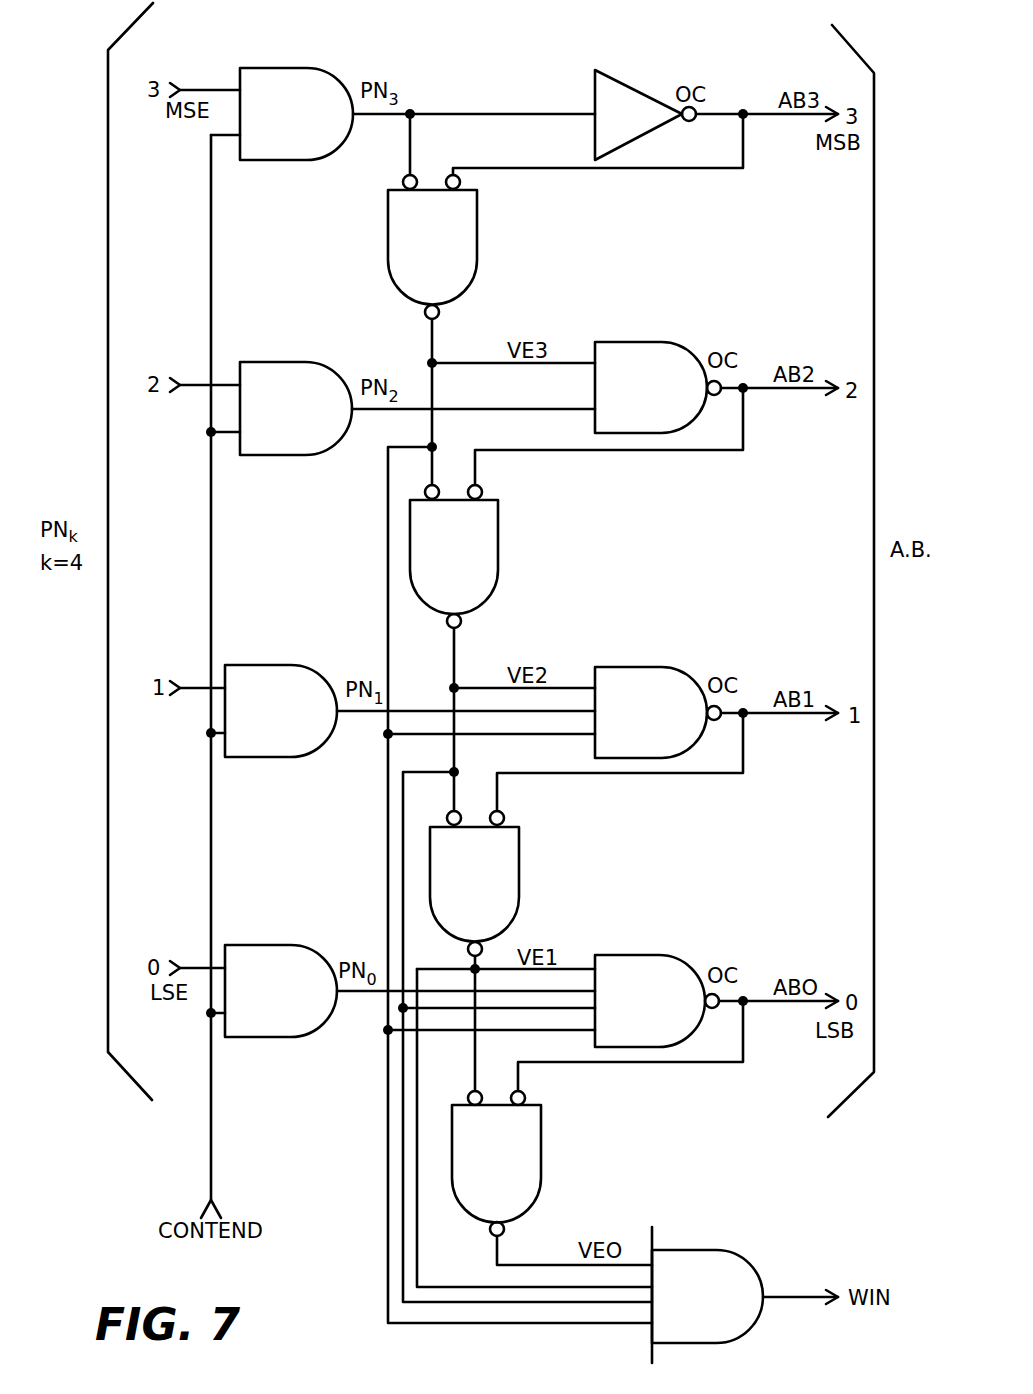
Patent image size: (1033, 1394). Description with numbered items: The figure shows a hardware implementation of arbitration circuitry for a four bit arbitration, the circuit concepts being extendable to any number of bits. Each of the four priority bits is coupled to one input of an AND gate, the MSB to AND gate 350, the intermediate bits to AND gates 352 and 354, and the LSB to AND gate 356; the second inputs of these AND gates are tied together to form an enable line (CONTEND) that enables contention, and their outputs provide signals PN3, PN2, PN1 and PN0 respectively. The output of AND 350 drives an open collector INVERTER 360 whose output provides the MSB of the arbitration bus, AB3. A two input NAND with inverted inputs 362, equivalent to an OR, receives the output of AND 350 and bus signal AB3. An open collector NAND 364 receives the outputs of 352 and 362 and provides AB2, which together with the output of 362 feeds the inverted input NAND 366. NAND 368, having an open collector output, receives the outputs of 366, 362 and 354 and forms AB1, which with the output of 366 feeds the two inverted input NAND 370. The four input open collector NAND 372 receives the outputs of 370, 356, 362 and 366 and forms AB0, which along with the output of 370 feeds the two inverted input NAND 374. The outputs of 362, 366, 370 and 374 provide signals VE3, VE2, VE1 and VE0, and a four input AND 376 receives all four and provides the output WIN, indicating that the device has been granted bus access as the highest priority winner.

The AND gate 350 is at (272, 67).
The AND gate 352 is at (272, 362).
The AND gate 354 is at (258, 665).
The AND gate 356 is at (258, 945).
The open collector INVERTER 360 is at (612, 70).
The two input NAND with inverted inputs 362 is at (477, 250).
The two input NAND with open collector output 364 is at (637, 342).
The two input NAND with inverted inputs 366 is at (498, 553).
The NAND having an open collector output 368 is at (640, 667).
The NAND having two inverted inputs 370 is at (519, 885).
The four input NAND having an open collector 372 is at (640, 955).
The two inverted input NAND 374 is at (541, 1160).
The four input AND 376 is at (695, 1250).